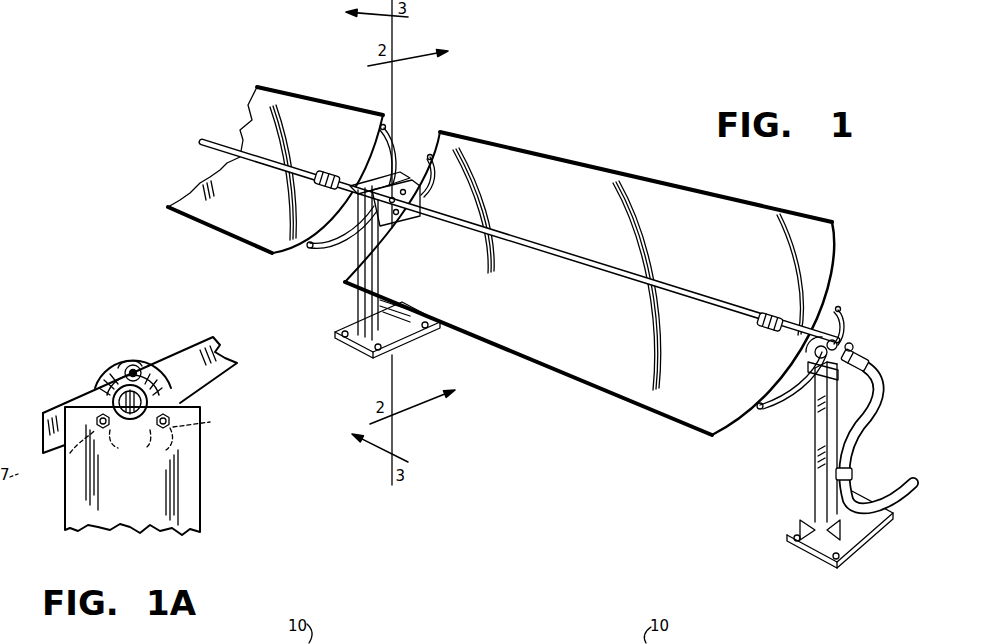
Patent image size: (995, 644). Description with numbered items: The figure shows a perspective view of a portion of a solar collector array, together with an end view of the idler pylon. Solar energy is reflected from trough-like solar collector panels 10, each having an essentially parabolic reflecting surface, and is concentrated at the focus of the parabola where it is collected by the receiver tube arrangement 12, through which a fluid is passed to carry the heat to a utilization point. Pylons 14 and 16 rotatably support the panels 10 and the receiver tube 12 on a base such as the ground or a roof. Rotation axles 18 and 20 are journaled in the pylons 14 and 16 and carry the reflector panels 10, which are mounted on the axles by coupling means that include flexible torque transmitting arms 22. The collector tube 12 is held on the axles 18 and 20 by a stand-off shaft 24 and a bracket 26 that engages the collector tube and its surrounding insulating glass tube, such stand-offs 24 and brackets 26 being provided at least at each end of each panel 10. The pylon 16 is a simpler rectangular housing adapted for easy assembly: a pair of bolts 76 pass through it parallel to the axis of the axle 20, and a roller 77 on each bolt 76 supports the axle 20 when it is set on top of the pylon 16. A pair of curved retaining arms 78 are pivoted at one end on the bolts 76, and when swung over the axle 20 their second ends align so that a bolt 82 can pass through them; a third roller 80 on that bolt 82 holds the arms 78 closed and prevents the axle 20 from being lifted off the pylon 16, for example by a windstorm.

In FIG. 1, the solar collector panel 10 is at (322, 112).
In FIG. 1, the receiver tube arrangement 12 is at (217, 140).
In FIG. 1, the pylon 14 is at (355, 247).
In FIG. 1, the support pylon 16 is at (807, 452).
In FIG. 1A, the support pylon 16 is at (193, 500).
In FIG. 1, the rotation axle 18 is at (398, 223).
In FIG. 1, the rotation axle 20 is at (800, 352).
In FIG. 1A, the rotation axle 20 is at (117, 387).
In FIG. 1, the flexible torque transmitting arm 22 is at (368, 160).
In FIG. 1, the stand-off shaft 24 is at (337, 193).
In FIG. 1, the bracket 26 is at (330, 155).
In FIG. 1, the bolt 76 is at (880, 357).
In FIG. 1A, the bolt 76 is at (107, 437).
In FIG. 1A, the roller 77 is at (200, 427).
In FIG. 1, the curved retaining arm 78 is at (840, 340).
In FIG. 1A, the curved retaining arm 78 is at (100, 397).
In FIG. 1, the third roller 80 is at (822, 390).
In FIG. 1A, the third roller 80 is at (133, 358).
In FIG. 1, the bolt 82 is at (854, 349).
In FIG. 1A, the bolt 82 is at (136, 368).